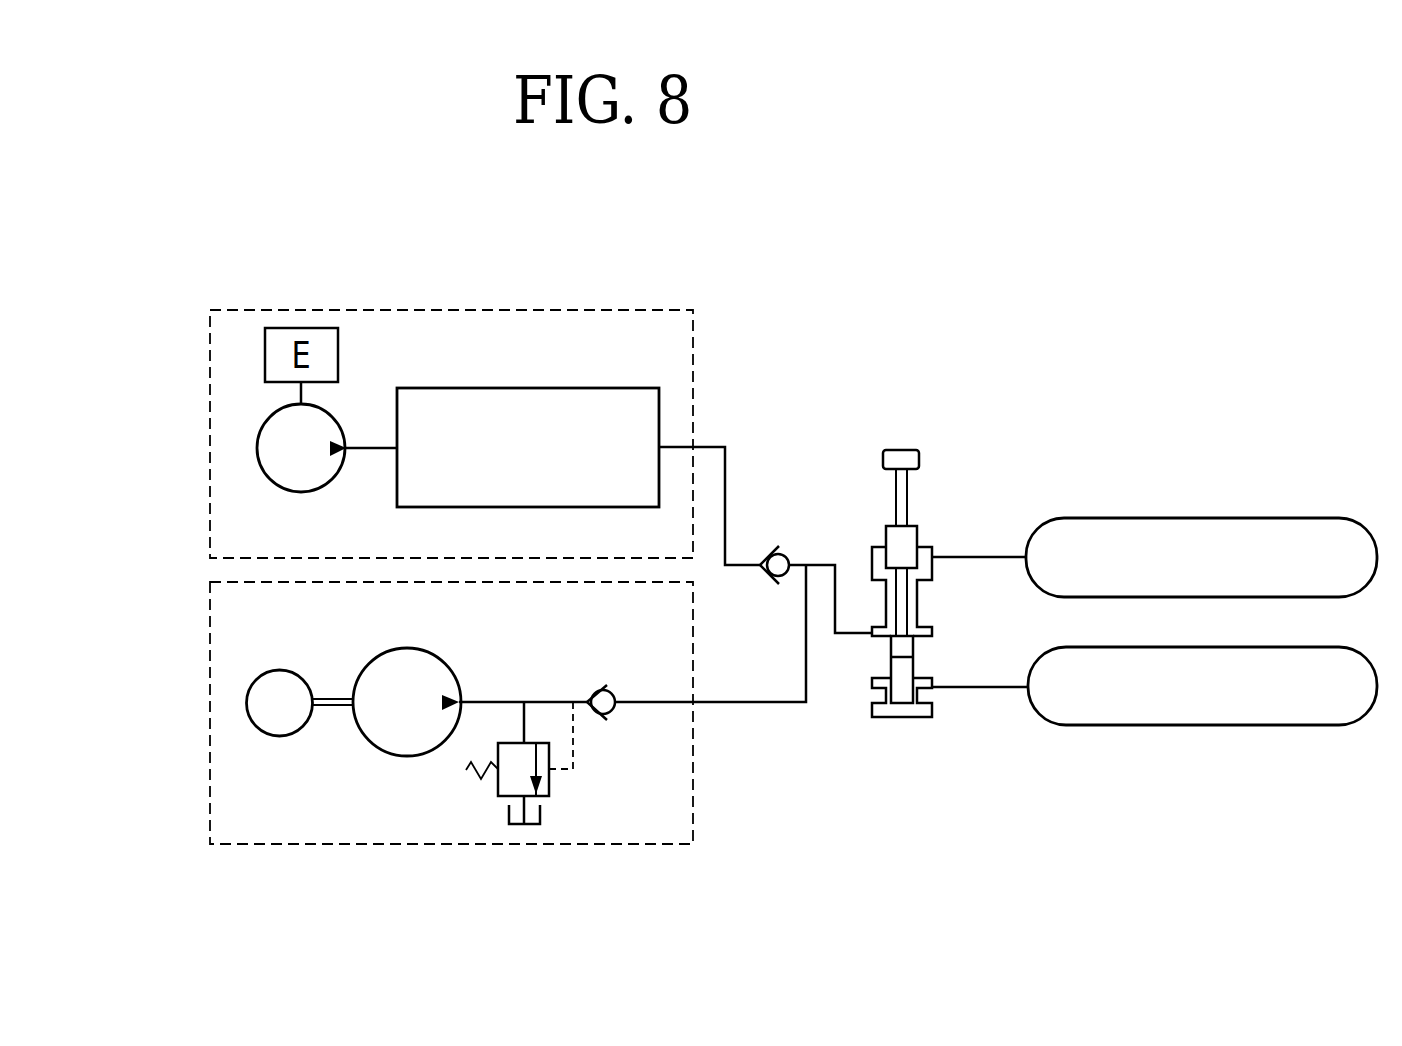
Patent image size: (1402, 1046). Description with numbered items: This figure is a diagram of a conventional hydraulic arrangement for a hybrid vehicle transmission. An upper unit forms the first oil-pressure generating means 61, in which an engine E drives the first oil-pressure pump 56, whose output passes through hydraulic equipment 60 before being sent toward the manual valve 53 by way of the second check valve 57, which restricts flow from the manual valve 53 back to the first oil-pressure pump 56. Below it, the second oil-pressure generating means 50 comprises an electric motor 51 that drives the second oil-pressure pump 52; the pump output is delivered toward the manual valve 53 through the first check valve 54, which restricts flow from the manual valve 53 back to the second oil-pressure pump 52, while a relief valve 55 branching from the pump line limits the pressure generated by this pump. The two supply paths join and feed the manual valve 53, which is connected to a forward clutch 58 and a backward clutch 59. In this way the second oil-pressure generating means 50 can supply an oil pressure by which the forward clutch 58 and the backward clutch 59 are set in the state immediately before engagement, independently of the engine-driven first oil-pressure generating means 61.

The second oil-pressure generating means 50 is at (205, 703).
The electric motor 51 is at (279, 669).
The second oil-pressure pump 52 is at (404, 651).
The manual valve 53 is at (912, 450).
The first check valve 54 is at (605, 690).
The relief valve 55 is at (551, 782).
The first oil-pressure pump 56 is at (257, 448).
The second check valve 57 is at (779, 546).
The forward clutch 58 is at (1133, 518).
The backward clutch 59 is at (1135, 726).
The hydraulic equipment 60 is at (588, 388).
The first oil-pressure generating means 61 is at (553, 310).